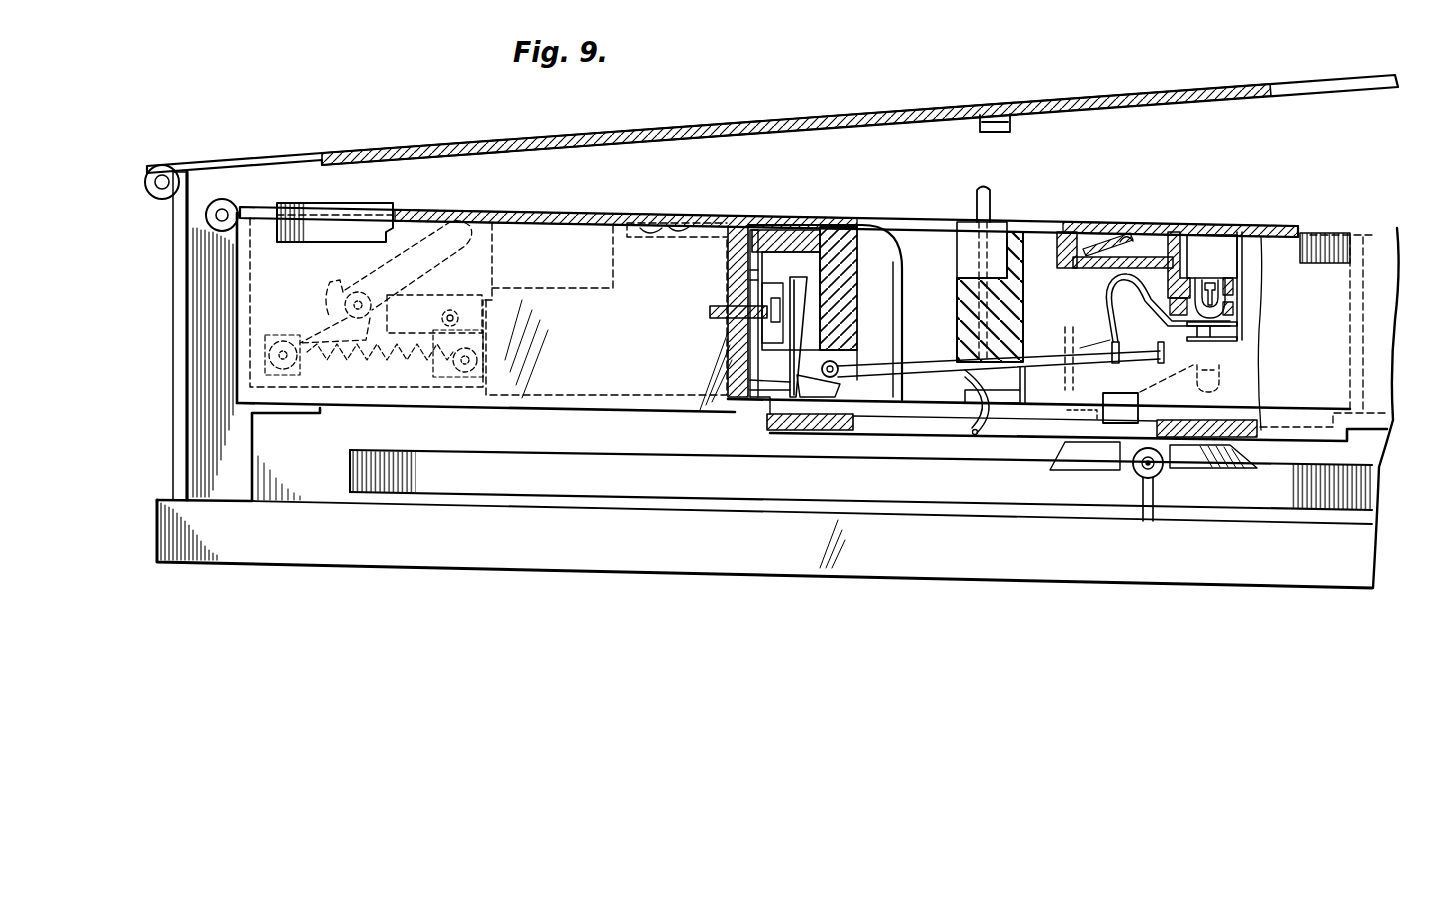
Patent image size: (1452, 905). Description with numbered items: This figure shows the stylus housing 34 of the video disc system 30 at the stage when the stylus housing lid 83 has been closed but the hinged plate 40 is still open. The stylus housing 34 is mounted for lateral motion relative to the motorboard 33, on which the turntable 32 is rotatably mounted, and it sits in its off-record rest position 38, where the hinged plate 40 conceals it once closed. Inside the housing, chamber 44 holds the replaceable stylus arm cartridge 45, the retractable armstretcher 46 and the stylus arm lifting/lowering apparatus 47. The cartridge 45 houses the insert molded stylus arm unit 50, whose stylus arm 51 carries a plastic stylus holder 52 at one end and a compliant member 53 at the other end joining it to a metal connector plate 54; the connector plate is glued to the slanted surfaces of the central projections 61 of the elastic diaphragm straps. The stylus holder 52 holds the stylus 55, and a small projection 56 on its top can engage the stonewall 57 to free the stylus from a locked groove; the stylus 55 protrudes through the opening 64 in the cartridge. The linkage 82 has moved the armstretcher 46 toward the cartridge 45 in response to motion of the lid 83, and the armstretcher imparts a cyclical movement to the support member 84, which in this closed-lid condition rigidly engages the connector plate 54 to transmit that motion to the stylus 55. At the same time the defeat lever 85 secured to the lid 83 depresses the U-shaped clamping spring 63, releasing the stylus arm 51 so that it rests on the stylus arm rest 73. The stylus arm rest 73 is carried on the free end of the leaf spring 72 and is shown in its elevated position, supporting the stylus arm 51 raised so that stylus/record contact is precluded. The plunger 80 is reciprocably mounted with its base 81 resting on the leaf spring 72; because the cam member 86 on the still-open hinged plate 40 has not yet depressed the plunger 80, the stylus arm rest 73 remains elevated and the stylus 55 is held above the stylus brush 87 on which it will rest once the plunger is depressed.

The video disc system 30 is at (1270, 192).
The turntable 32 is at (348, 456).
The motorboard 33 is at (318, 504).
The stylus housing 34 is at (1395, 350).
The off-record rest position 38 is at (237, 267).
The hinged plate 40 is at (245, 160).
The chamber 44 is at (284, 274).
The stylus arm cartridge 45 is at (1023, 280).
The armstretcher 46 is at (622, 341).
The stylus arm lifting/lowering apparatus 47 is at (1067, 332).
The stylus arm unit 50 is at (1106, 336).
The stylus arm 51 is at (867, 407).
The stylus holder 52 is at (1123, 365).
The compliant member 53 is at (812, 428).
The connector plate 54 is at (744, 365).
The stylus 55 is at (1190, 350).
The projection 56 is at (1112, 338).
The stonewall 57 is at (1110, 423).
The central projections 61 is at (838, 288).
The U-shaped spring 63 is at (877, 400).
The opening 64 is at (823, 413).
The leaf spring 72 is at (1050, 404).
The stylus arm rest 73 is at (905, 407).
The plunger 80 is at (990, 210).
The base 81 is at (963, 407).
The linkage 82 is at (414, 294).
The lid 83 is at (551, 208).
The support member 84 is at (773, 282).
The defeat lever 85 is at (893, 324).
The cam member 86 is at (1006, 134).
The stylus brush 87 is at (1163, 471).